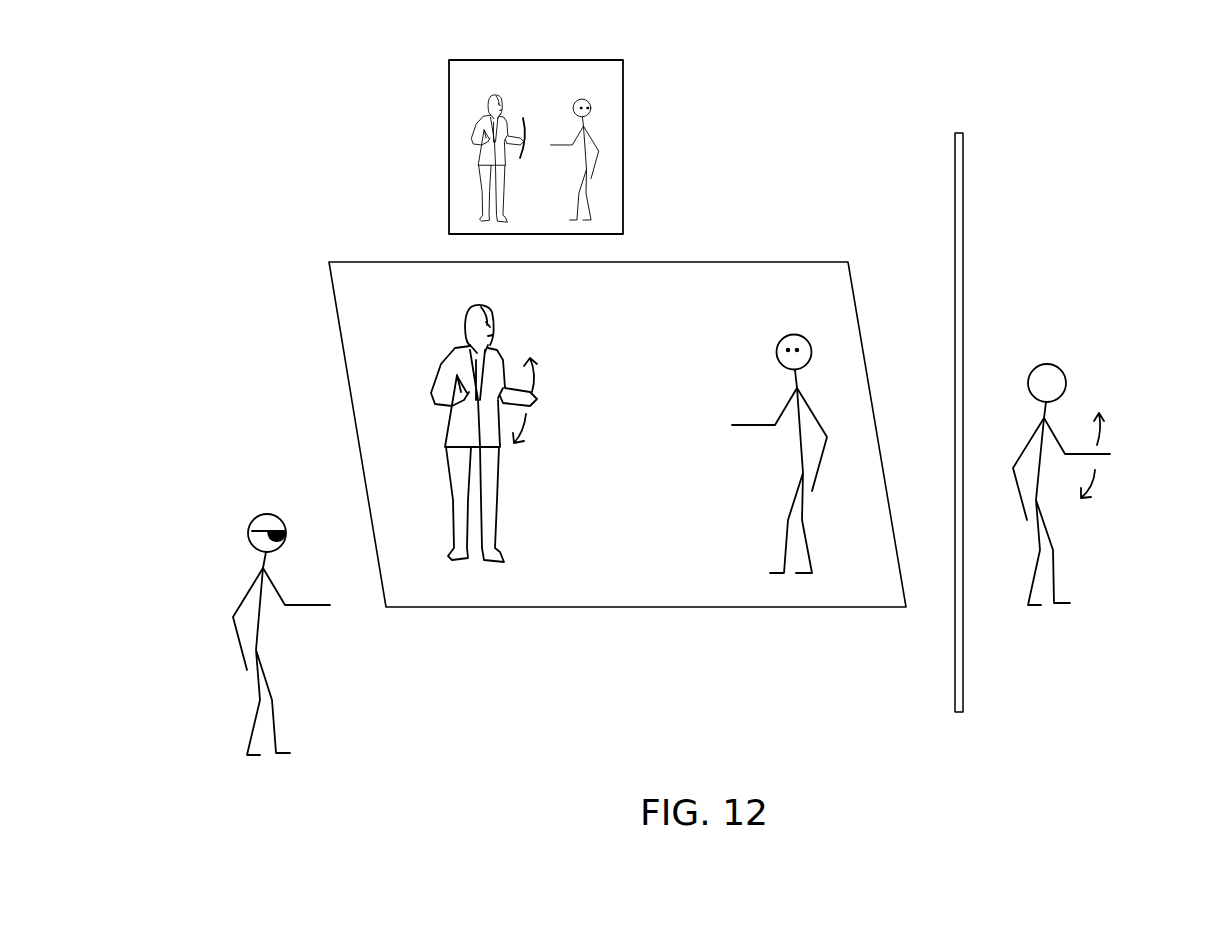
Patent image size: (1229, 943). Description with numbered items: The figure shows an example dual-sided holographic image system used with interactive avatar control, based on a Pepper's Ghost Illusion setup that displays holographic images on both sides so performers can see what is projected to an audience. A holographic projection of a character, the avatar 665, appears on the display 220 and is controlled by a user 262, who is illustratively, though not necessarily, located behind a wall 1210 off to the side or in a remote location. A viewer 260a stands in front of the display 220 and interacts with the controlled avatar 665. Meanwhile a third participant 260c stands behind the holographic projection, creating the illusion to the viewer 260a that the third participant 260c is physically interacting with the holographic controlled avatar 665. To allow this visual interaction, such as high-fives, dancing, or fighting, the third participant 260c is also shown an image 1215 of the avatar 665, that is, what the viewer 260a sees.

The image 1215 is at (639, 150).
The wall 1210 is at (977, 263).
The display 220 is at (338, 360).
The avatar 665 is at (524, 323).
The third participant 260c is at (779, 491).
The viewer 260a is at (294, 694).
The user 262 is at (1075, 561).